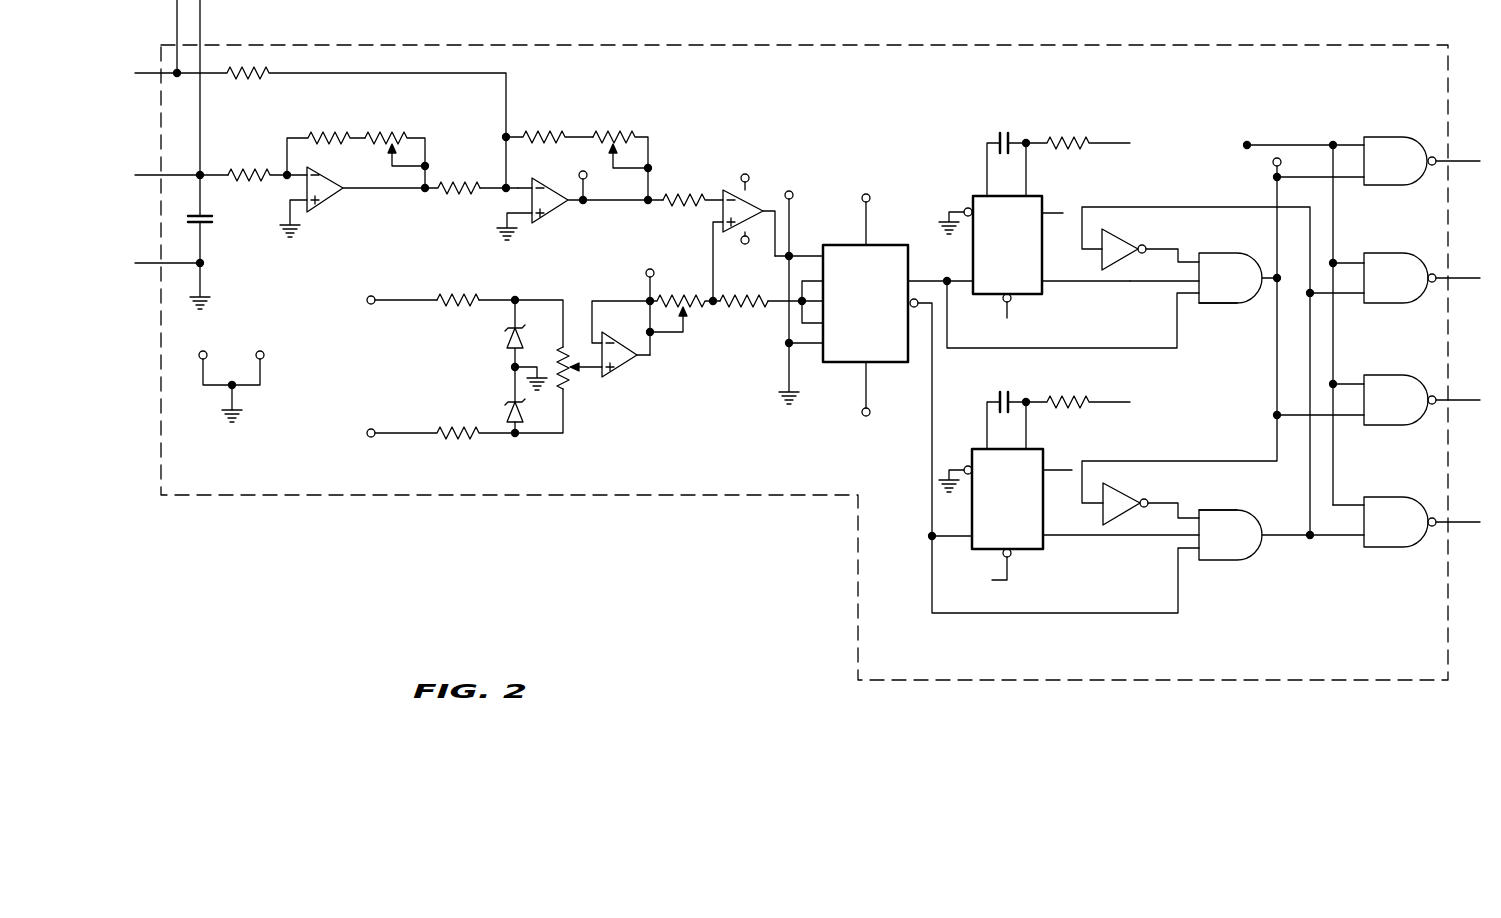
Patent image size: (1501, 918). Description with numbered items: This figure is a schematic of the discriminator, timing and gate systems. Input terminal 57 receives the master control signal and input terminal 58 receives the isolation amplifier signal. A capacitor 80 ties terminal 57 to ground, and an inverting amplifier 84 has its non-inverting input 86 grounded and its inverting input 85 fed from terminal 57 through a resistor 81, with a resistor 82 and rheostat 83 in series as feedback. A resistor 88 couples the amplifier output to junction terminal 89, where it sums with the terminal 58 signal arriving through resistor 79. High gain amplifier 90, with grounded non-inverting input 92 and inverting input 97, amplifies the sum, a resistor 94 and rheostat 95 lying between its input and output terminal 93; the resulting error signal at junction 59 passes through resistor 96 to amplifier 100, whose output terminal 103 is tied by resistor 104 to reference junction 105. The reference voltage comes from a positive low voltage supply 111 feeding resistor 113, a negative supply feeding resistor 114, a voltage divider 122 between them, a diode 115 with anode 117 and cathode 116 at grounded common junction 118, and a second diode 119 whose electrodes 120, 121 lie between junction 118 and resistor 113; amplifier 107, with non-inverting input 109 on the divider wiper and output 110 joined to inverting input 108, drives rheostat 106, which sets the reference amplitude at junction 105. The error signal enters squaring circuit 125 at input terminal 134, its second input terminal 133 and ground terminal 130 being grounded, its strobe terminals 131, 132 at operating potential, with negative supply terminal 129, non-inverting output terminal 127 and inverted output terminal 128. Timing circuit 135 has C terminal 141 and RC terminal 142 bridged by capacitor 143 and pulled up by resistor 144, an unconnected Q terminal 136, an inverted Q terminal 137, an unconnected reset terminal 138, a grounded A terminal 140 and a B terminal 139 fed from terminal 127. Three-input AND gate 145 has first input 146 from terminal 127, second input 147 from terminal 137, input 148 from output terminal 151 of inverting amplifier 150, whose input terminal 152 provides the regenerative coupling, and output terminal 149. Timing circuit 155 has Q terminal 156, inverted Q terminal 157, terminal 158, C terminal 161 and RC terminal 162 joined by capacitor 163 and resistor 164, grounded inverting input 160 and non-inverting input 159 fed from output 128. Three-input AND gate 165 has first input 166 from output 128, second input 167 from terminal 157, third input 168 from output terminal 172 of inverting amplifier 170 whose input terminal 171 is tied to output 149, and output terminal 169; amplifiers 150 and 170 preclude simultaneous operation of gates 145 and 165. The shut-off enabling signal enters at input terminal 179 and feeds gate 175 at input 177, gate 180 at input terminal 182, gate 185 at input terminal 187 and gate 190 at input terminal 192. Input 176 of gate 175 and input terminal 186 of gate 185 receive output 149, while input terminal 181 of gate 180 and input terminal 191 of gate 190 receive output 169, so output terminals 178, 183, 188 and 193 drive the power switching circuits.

The input terminal 57 is at (199, 173).
The input terminal 58 is at (178, 76).
The junction 59 is at (648, 205).
The resistor 79 is at (248, 78).
The capacitor 80 is at (212, 221).
The resistor 81 is at (250, 170).
The resistor 82 is at (331, 137).
The rheostat 83 is at (393, 137).
The inverting amplifier 84 is at (327, 200).
The inverting input 85 is at (302, 172).
The non-inverting input 86 is at (305, 195).
The resistor 88 is at (460, 182).
The junction terminal 89 is at (504, 189).
The high gain amplifier 90 is at (560, 210).
The non-inverting input 92 is at (513, 222).
The output terminal 93 is at (584, 193).
The resistor 94 is at (561, 133).
The rheostat 95 is at (628, 133).
The resistor 96 is at (698, 195).
The inverting input 97 is at (522, 186).
The amplifier 100 is at (752, 200).
The output terminal 103 is at (768, 208).
The resistor 104 is at (733, 304).
The reference junction 105 is at (713, 308).
The rheostat 106 is at (688, 292).
The amplifier 107 is at (630, 362).
The inverting input 108 is at (602, 340).
The non-inverting input terminal 109 is at (594, 374).
The output terminal 110 is at (650, 357).
The positive low voltage supply 111 is at (392, 298).
The resistor 113 is at (456, 297).
The resistor 114 is at (443, 434).
The diode 115 is at (513, 403).
The cathode 116 is at (512, 385).
The anode 117 is at (518, 435).
The common junction 118 is at (518, 367).
The second diode 119 is at (508, 336).
The ground junction 120 is at (508, 352).
The supply connection 121 is at (868, 245).
The voltage divider 122 is at (567, 380).
The voltage squaring circuit 125 is at (855, 246).
The non-inverting output terminal 127 is at (911, 276).
The inverted output terminal 128 is at (866, 364).
The negative supply terminal 129 is at (862, 375).
The ground terminal 130 is at (821, 345).
The ST1 terminal 131 is at (788, 338).
The ST2 terminal 132 is at (820, 300).
The second input terminal 133 is at (823, 278).
The input terminal 134 is at (818, 256).
The timing circuit 135 is at (968, 197).
The Q1 terminal 136 is at (1048, 212).
The -Q1 terminal 137 is at (1047, 284).
The reset terminal 138 is at (1011, 300).
The B1 terminal 139 is at (971, 285).
The A1 terminal 140 is at (967, 216).
The C1 terminal 141 is at (987, 194).
The input 142 is at (1031, 194).
The capacitor 143 is at (1023, 119).
The resistor 144 is at (1082, 136).
The three input AND gate 145 is at (1222, 303).
The first input 146 is at (1190, 300).
The second input 147 is at (1163, 283).
The input 148 is at (1195, 254).
The output terminal 149 is at (1267, 281).
The inverting amplifier 150 is at (1139, 245).
The output terminal 151 is at (1162, 250).
The input terminal 152 is at (1083, 252).
The timing circuit 155 is at (1047, 454).
The Q2 terminal 156 is at (1044, 474).
The -Q2 terminal 157 is at (1044, 540).
The terminal 158 is at (1008, 558).
The non-inverting input 159 is at (971, 543).
The inverting input 160 is at (966, 476).
The C2 terminal 161 is at (985, 448).
The RC terminal 162 is at (1032, 449).
The capacitor 163 is at (1008, 368).
The resistor 164 is at (1076, 400).
The three input AND gate 165 is at (1255, 522).
The first input 166 is at (1193, 548).
The second input 167 is at (1192, 533).
The third input terminal 168 is at (1195, 513).
The output terminal 169 is at (1268, 538).
The inverting amplifier 170 is at (1131, 481).
The input terminal 171 is at (1099, 502).
The output terminal 172 is at (1157, 503).
The NAND gate 175 is at (1381, 137).
The input 176 is at (1351, 181).
The NAND gate input 177 is at (1357, 143).
The output terminal 178 is at (1434, 157).
The input terminal 179 is at (1247, 144).
The NAND gate 180 is at (1432, 243).
The input terminal 181 is at (1351, 295).
The input terminal 182 is at (1353, 261).
The output terminal 183 is at (1436, 284).
The NAND gate 185 is at (1400, 385).
The input terminal 186 is at (1351, 418).
The input terminal 187 is at (1357, 386).
The output terminal 188 is at (1434, 404).
The NAND gate 190 is at (1383, 497).
The input terminal 191 is at (1357, 550).
The input terminal 192 is at (1357, 508).
The output terminal 193 is at (1434, 520).